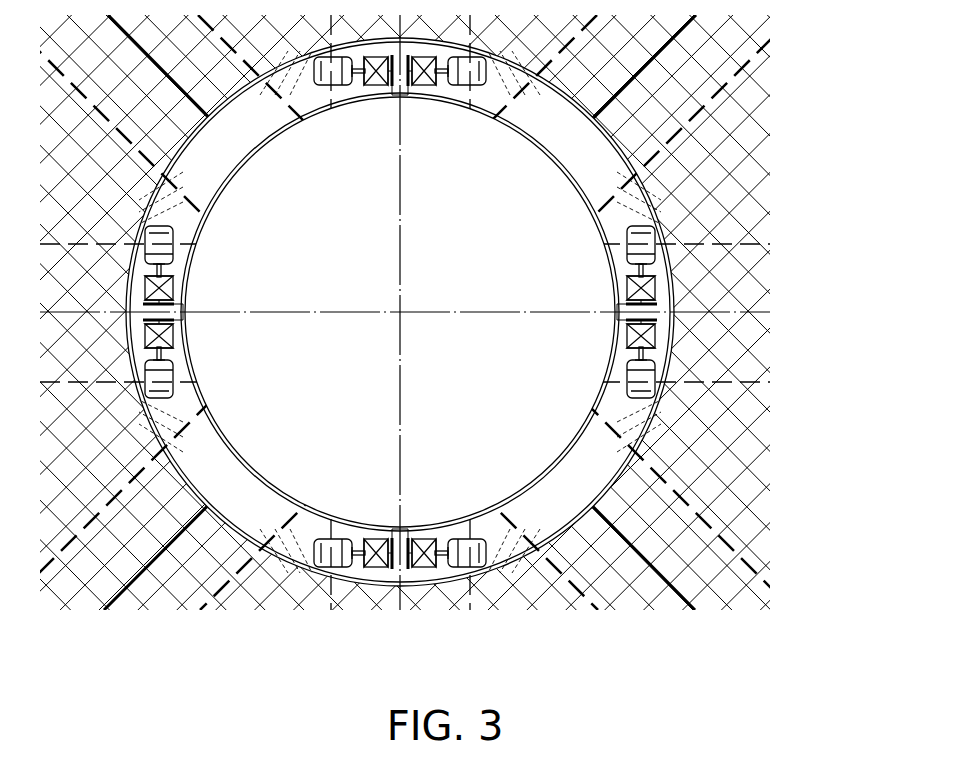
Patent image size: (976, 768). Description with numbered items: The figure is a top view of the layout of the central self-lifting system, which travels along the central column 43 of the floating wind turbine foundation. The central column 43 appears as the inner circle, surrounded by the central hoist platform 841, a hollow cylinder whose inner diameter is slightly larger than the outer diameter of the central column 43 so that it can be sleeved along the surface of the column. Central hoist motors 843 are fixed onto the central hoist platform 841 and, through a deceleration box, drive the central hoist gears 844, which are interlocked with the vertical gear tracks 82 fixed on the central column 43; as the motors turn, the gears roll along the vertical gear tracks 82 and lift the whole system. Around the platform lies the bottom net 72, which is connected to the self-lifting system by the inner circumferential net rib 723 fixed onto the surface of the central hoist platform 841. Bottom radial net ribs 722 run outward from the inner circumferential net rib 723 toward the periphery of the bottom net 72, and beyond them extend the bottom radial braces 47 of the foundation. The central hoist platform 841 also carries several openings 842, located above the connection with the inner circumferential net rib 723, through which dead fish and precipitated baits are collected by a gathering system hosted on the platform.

The bottom net 72 is at (624, 88).
The bottom radial net rib 722 is at (650, 97).
The bottom radial brace 47 is at (672, 132).
The inner circumferential net rib 723 is at (668, 195).
The opening 842 is at (678, 222).
The central hoist motor 843 is at (673, 272).
The vertical gear track 82 is at (732, 312).
The central hoist platform 841 is at (665, 365).
The central column 43 is at (572, 460).
The central hoist gear 844 is at (425, 598).